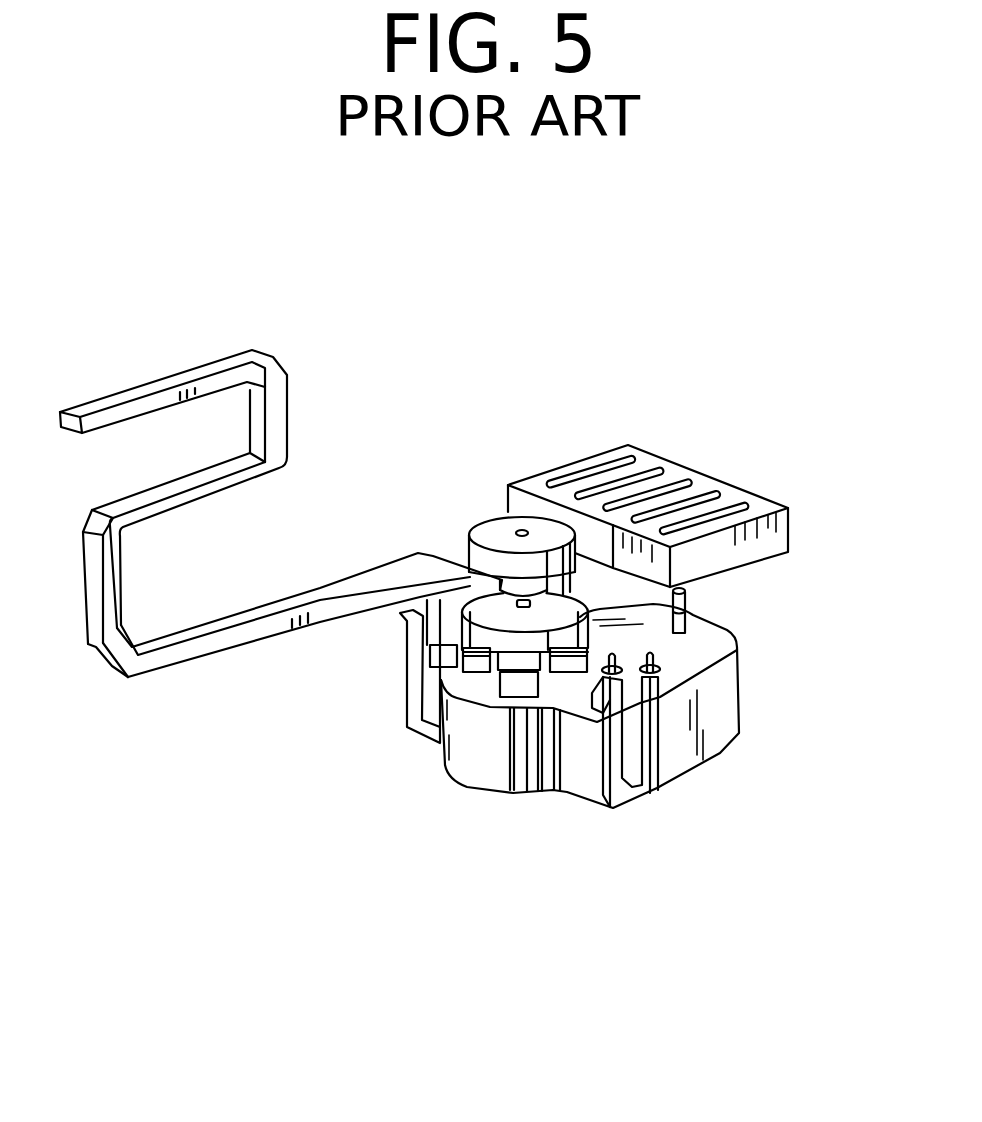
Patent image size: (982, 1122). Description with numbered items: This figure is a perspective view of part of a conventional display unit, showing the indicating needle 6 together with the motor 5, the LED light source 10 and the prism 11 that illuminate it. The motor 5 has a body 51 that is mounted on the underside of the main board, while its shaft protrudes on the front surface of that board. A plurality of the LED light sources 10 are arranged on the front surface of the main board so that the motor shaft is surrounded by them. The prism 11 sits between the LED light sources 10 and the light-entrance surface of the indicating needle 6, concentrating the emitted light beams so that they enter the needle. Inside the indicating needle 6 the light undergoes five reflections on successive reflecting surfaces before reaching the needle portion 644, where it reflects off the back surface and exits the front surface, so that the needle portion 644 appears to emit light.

The needle portion 644 is at (162, 403).
The indicating needle 6 is at (302, 578).
The motor 5 is at (608, 696).
The body 51 is at (728, 707).
The LED light source 10 is at (528, 802).
The prism 11 is at (507, 633).